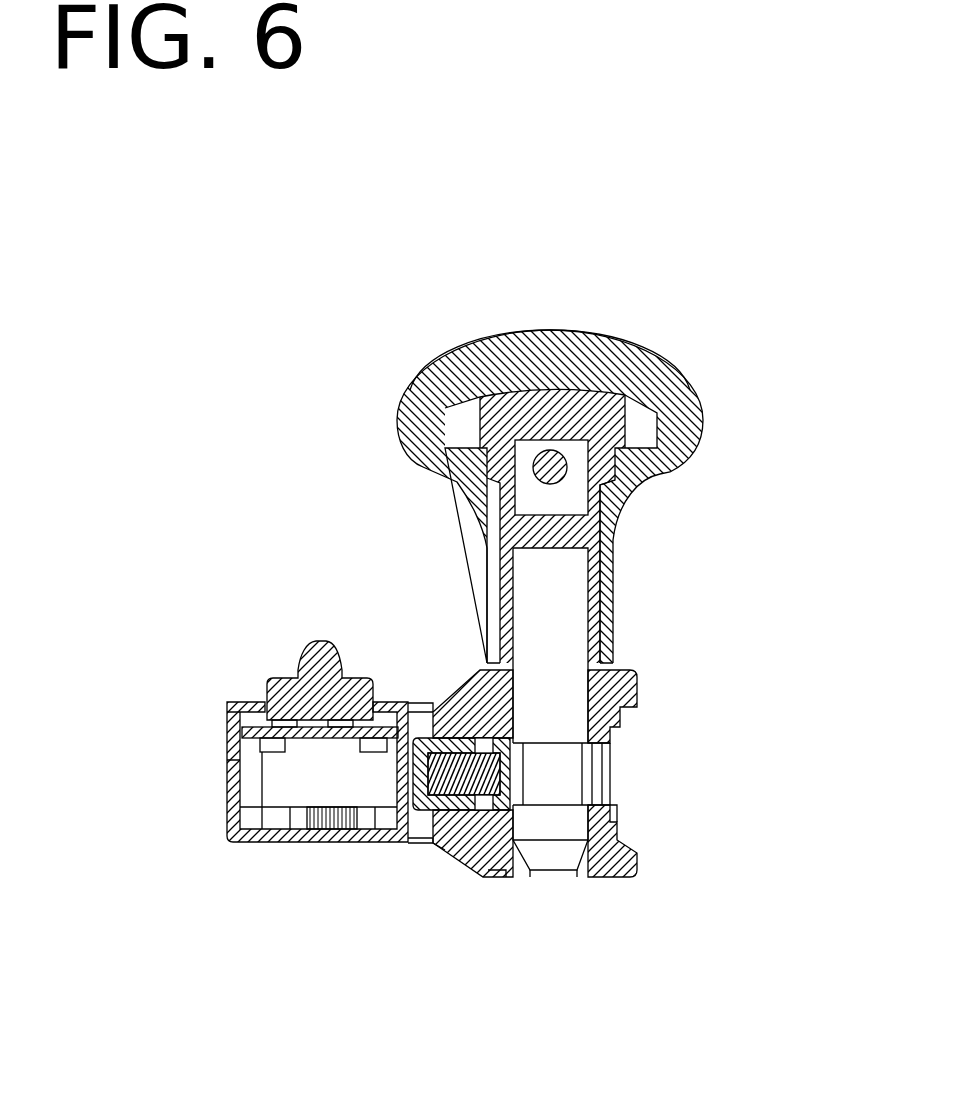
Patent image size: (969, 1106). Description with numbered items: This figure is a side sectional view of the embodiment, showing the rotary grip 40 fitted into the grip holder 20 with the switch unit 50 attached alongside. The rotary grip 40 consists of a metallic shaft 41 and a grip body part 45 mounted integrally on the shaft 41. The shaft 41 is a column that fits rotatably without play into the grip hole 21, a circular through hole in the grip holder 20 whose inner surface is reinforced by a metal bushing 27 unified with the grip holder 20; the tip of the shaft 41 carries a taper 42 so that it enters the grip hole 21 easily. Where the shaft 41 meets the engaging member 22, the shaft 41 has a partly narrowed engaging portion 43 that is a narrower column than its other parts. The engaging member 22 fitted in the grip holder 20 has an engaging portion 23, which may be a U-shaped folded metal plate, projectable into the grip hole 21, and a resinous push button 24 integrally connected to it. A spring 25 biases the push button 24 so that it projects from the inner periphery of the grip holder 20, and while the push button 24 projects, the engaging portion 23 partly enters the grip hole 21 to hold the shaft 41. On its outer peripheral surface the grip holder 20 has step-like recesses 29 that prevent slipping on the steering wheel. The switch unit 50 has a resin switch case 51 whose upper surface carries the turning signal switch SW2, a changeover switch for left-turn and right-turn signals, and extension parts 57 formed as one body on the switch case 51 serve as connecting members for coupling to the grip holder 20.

The rotary grip 40 is at (645, 344).
The grip body part 45 is at (470, 348).
The shaft 41 is at (568, 587).
The grip holder 20 is at (455, 862).
The push button 24 is at (410, 703).
The extension part 57 is at (425, 705).
The engaging member 22 is at (413, 843).
The spring 25 is at (442, 845).
The metal bushing 27 is at (610, 667).
The engaging portion 43 is at (568, 770).
The engaging portion 23 is at (610, 773).
The step-like recess 29 is at (620, 805).
The taper 42 is at (517, 877).
The grip hole 21 is at (582, 877).
The switch unit 50 is at (228, 703).
The switch case 51 is at (227, 795).
The turning signal switch SW2 is at (318, 638).